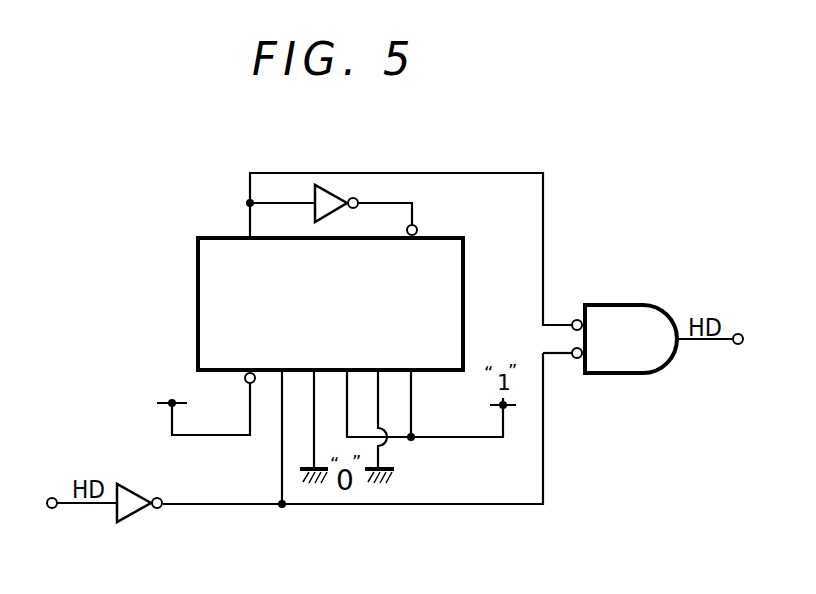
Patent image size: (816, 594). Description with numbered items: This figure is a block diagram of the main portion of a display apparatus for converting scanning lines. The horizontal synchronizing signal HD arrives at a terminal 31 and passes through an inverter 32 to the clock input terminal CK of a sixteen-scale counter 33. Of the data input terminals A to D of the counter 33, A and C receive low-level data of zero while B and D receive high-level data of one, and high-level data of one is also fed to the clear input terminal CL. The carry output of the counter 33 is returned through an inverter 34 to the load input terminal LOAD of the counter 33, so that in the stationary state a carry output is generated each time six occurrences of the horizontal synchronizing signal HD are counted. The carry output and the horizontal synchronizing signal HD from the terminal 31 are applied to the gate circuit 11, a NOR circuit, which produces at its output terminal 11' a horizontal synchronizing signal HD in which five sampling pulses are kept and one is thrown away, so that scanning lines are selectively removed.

The gate circuit 11 is at (624, 365).
The output terminal 11' is at (737, 367).
The terminal 31 is at (52, 509).
The inverter 32 is at (158, 509).
The 16-scale counter 33 is at (197, 293).
The inverter 34 is at (313, 196).